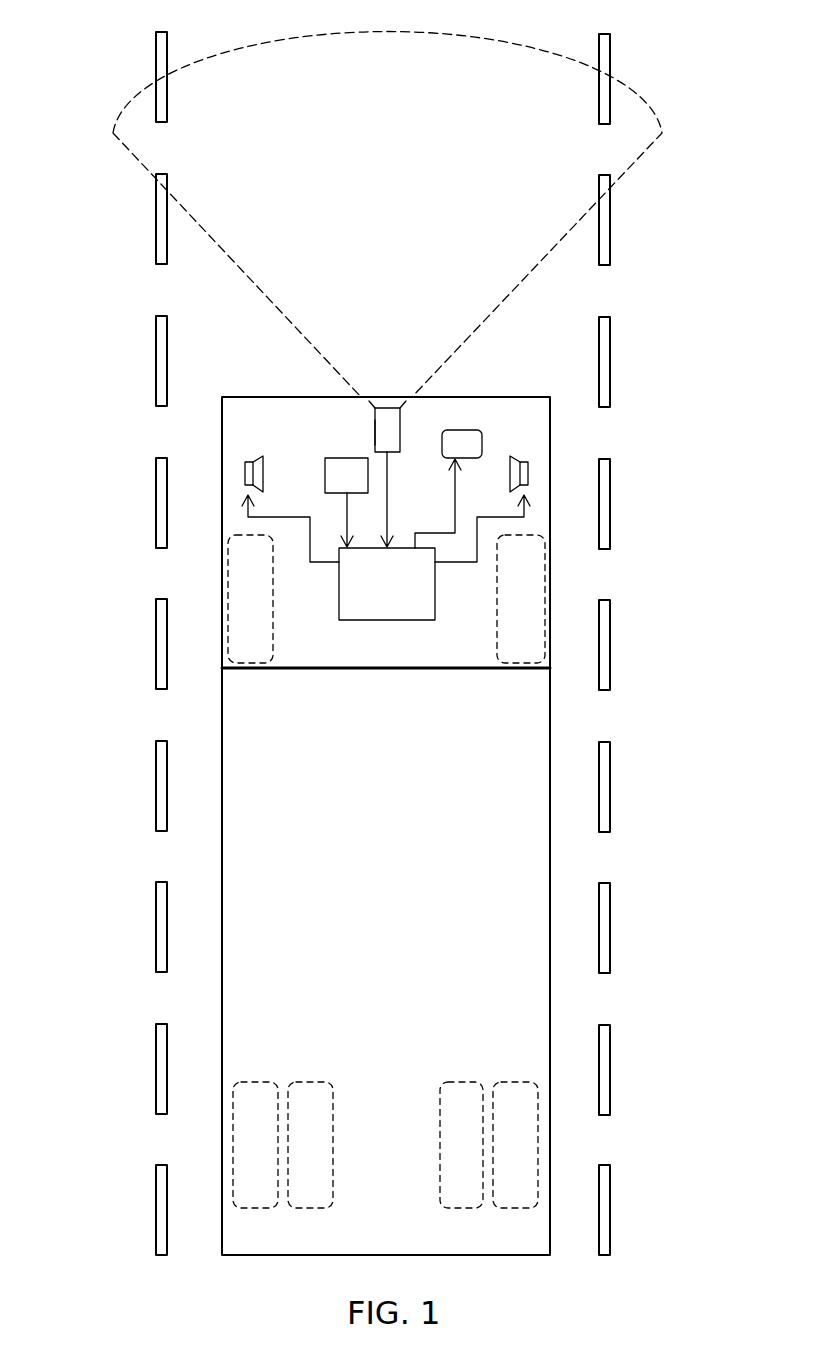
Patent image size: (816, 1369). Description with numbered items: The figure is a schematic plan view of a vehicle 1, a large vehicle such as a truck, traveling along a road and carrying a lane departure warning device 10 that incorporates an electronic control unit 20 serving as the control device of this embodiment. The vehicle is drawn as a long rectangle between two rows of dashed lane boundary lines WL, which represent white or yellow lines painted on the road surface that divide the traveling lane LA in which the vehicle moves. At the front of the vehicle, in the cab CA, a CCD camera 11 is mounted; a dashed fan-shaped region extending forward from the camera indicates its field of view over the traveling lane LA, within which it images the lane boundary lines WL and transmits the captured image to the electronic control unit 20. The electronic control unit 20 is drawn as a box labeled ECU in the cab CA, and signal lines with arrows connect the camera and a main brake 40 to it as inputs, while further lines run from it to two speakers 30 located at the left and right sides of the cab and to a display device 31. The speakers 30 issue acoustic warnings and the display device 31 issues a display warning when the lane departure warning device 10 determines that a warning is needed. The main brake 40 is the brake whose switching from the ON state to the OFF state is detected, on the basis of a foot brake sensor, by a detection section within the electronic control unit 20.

The vehicle 1 is at (391, 913).
The lane departure warning device 10 is at (398, 370).
The CCD camera 11 is at (375, 432).
The electronic control unit 20 is at (383, 621).
The speakers 30 is at (245, 470).
The display device 31 is at (462, 430).
The main brake 40 is at (325, 473).
The lane boundary lines WL is at (154, 52).
The traveling lane LA is at (397, 132).
The cab CA is at (551, 522).